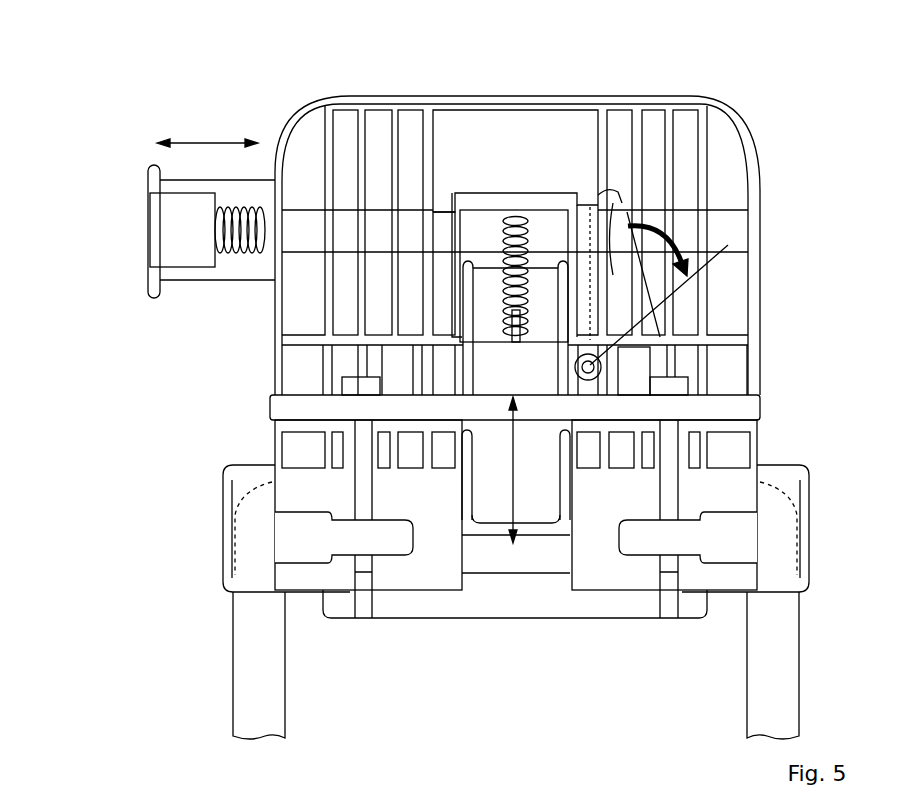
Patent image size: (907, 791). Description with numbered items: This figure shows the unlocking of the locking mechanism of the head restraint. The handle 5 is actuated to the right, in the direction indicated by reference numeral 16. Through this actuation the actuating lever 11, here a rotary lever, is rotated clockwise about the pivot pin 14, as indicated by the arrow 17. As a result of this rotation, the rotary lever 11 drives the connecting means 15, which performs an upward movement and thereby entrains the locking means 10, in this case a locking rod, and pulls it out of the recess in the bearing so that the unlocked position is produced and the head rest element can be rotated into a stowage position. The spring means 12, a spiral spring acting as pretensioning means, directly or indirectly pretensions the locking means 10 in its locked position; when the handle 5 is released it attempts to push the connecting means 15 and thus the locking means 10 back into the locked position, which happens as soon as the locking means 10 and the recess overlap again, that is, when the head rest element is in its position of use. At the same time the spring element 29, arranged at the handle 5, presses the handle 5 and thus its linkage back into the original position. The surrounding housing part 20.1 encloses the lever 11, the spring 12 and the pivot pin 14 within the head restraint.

The handle 5 is at (183, 233).
The spring element 29 is at (247, 257).
The actuating direction of the handle 16 is at (207, 131).
The spring means 12 is at (515, 235).
The actuating lever 11 is at (620, 205).
The arrow indicating rotation of the rotary lever 17 is at (652, 213).
The housing part 20.1 is at (753, 178).
The pivot pin 14 is at (601, 368).
The locking means 10 is at (760, 407).
The connecting means 15 is at (500, 513).